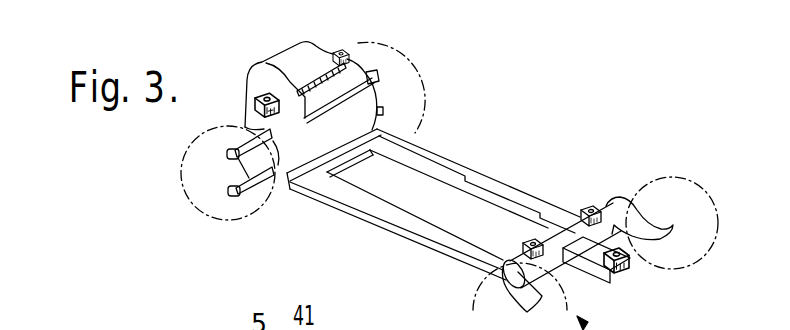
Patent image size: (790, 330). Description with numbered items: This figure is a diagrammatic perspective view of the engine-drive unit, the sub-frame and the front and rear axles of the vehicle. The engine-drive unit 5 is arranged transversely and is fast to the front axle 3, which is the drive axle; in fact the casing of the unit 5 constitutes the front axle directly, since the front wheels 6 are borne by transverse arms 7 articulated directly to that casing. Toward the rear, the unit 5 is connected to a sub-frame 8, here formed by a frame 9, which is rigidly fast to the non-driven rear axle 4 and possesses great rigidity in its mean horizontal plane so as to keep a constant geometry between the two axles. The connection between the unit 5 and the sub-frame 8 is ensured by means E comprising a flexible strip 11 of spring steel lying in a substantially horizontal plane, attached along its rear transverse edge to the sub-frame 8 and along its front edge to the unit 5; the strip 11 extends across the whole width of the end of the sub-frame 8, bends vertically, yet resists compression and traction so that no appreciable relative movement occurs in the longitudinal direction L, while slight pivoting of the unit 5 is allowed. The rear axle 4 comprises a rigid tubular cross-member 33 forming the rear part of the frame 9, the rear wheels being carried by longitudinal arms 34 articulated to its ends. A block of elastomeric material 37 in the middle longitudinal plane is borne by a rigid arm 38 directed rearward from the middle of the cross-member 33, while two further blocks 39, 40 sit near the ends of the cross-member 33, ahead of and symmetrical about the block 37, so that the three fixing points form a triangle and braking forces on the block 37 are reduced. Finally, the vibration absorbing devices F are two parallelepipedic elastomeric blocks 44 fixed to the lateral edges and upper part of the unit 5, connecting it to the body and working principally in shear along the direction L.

The front axle 3 is at (205, 222).
The rear axle 4 is at (573, 196).
The engine-drive unit 5 is at (279, 63).
The front wheels 6 is at (193, 186).
The transverse arms 7 is at (236, 144).
The sub-frame 8 is at (367, 217).
The frame 9 is at (443, 165).
The flexible strip 11 is at (330, 148).
The rigid tubular cross-member 33 is at (555, 241).
The longitudinal arms 34 is at (632, 223).
The block of elastomeric material 37 is at (628, 270).
The rigid arm 38 is at (590, 253).
The block of elastomeric material 39 is at (523, 247).
The block of elastomeric material 40 is at (594, 207).
The blocks 44 is at (256, 107).
The means E is at (384, 124).
The vibration absorbing devices F is at (250, 88).
The longitudinal direction L is at (413, 272).